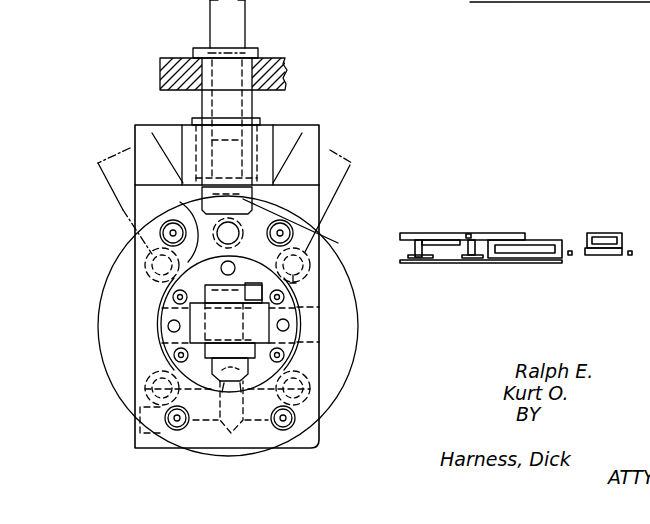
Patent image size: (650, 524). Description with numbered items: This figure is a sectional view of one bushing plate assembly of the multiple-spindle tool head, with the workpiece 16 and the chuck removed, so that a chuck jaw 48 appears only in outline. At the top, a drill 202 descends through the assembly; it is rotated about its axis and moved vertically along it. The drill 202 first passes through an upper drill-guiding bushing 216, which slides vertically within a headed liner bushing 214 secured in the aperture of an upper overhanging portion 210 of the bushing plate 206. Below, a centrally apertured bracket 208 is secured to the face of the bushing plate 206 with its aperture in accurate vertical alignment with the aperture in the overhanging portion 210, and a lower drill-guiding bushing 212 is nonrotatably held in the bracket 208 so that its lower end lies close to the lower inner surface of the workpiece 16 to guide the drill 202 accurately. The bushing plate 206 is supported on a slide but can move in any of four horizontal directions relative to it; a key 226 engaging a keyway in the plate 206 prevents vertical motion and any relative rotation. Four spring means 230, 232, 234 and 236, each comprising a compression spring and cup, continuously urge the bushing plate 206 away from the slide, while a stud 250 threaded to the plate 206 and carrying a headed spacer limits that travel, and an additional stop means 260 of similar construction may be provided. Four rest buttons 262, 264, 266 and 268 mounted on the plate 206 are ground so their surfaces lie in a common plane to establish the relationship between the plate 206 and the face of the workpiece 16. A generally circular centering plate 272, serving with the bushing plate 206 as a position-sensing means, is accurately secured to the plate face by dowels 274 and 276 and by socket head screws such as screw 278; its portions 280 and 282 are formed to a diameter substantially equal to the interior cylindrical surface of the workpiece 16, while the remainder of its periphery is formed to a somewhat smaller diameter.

The workpiece 16 is at (358, 332).
The jaw 48 is at (112, 180).
The drill 202 is at (237, 21).
The bushing plate 206 is at (265, 294).
The bracket 208 is at (270, 330).
The upper overhanging portion 210 is at (268, 143).
The drill-guiding bushing 212 is at (357, 365).
The headed liner bushing 214 is at (260, 120).
The upper drill-guiding bushing 216 is at (205, 100).
The key 226 is at (152, 316).
The urging means 230 is at (310, 389).
The urging means 232 is at (145, 389).
The urging means 234 is at (244, 233).
The urging means 236 is at (145, 265).
The stud 250 is at (236, 230).
The additional stop means 260 is at (212, 418).
The rest button 262 is at (295, 420).
The rest button 264 is at (291, 232).
The rest button 266 is at (162, 231).
The rest button 268 is at (175, 425).
The centering plate 272 is at (200, 217).
The dowel 274 is at (289, 323).
The dowel 276 is at (168, 326).
The socket head screw 278 is at (310, 265).
The centering plate portion 280 is at (268, 334).
The centering plate portion 282 is at (160, 336).